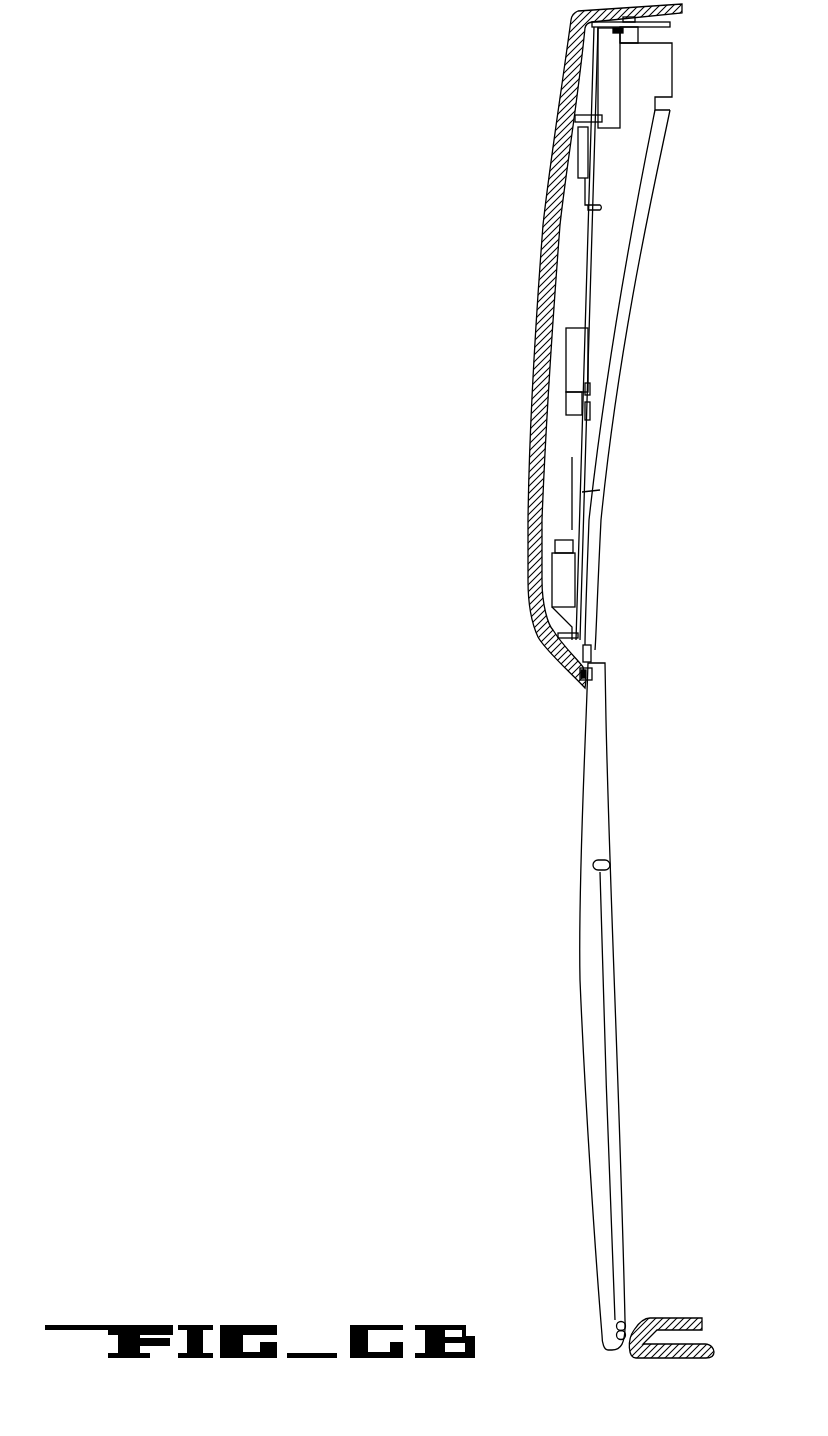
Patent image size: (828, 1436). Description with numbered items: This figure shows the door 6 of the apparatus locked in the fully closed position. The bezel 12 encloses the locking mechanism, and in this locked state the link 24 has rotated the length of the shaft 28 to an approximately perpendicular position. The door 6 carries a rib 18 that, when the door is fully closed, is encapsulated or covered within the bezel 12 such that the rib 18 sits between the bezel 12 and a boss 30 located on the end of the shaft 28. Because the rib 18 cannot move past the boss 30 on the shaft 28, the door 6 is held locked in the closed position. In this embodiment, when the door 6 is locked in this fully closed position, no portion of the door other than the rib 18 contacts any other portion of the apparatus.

The door 6 is at (597, 816).
The bezel 12 is at (538, 358).
The rib 18 is at (580, 673).
The link 24 is at (597, 65).
The shaft 28 is at (612, 252).
The boss 30 is at (587, 652).